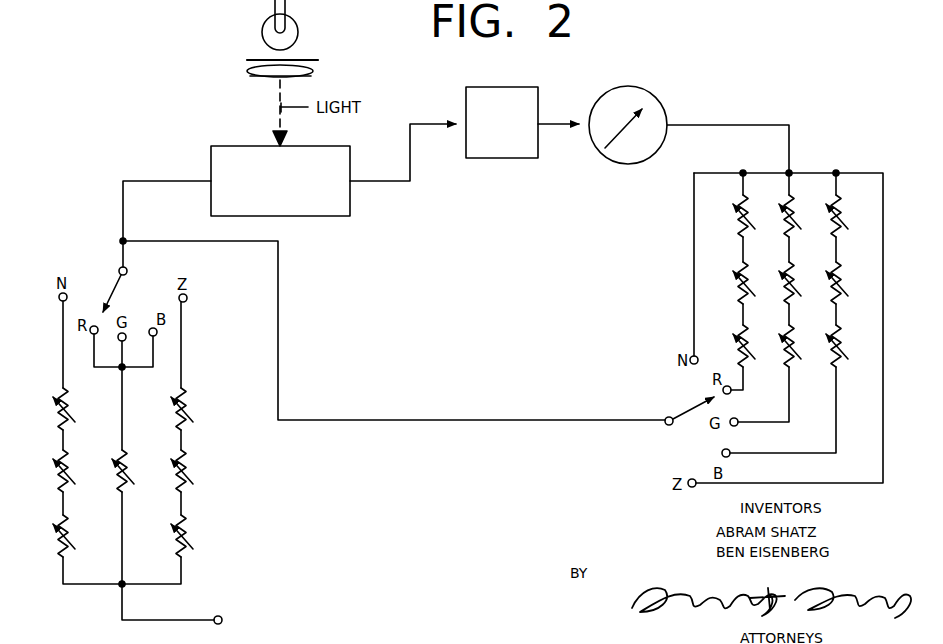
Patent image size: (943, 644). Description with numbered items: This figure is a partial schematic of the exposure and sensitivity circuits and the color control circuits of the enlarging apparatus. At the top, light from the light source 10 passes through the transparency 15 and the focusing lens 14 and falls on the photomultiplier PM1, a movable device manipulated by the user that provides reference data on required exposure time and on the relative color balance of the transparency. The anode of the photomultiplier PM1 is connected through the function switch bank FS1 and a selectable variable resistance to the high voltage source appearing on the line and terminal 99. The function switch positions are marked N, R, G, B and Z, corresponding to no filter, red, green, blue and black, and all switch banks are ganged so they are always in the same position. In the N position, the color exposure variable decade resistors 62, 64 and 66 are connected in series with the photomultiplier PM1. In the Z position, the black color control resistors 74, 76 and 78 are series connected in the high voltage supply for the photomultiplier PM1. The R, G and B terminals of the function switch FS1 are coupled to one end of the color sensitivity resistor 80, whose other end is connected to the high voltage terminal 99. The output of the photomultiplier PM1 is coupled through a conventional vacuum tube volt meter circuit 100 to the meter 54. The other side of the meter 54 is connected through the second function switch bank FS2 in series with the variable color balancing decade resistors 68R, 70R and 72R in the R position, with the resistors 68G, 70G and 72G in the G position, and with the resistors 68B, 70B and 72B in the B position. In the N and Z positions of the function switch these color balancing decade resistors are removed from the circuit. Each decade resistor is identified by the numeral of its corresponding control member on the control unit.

The light source 10 is at (298, 31).
The focusing lens 14 is at (300, 78).
The transparency 15 is at (258, 59).
The photomultiplier PM1 is at (239, 146).
The vacuum tube volt meter circuit 100 is at (518, 158).
The meter 54 is at (651, 96).
The variable color balancing decade resistor 68R is at (738, 218).
The variable color balancing decade resistor 68G is at (783, 213).
The variable color balancing decade resistor 68B is at (827, 208).
The variable color balancing decade resistor 70R is at (740, 278).
The variable color balancing decade resistor 70G is at (787, 278).
The variable color balancing decade resistor 70B is at (828, 265).
The variable color balancing decade resistor 72R is at (735, 352).
The variable color balancing decade resistor 72G is at (787, 365).
The variable color balancing decade resistor 72B is at (833, 365).
The function switch bank FS1 is at (110, 292).
The function switch bank FS2 is at (694, 398).
The color exposure variable decade resistor 62 is at (55, 412).
The color exposure variable decade resistor 64 is at (55, 476).
The color exposure variable decade resistor 66 is at (58, 547).
The black color control resistor 74 is at (190, 397).
The black color control resistor 76 is at (190, 472).
The black color control resistor 78 is at (190, 537).
The color sensitivity resistor 80 is at (133, 464).
The high voltage terminal 99 is at (202, 618).